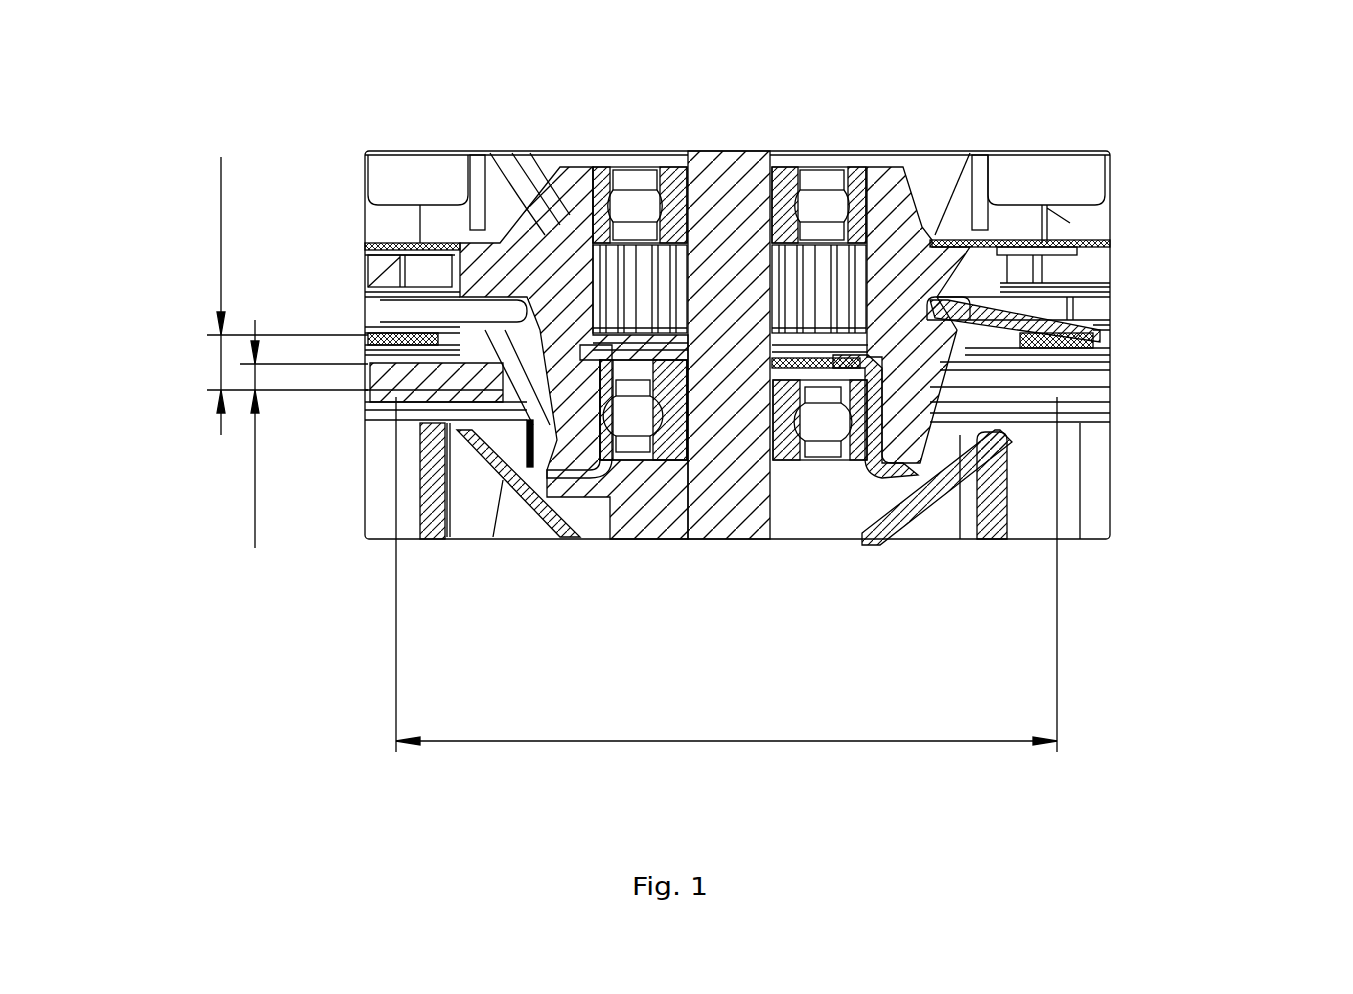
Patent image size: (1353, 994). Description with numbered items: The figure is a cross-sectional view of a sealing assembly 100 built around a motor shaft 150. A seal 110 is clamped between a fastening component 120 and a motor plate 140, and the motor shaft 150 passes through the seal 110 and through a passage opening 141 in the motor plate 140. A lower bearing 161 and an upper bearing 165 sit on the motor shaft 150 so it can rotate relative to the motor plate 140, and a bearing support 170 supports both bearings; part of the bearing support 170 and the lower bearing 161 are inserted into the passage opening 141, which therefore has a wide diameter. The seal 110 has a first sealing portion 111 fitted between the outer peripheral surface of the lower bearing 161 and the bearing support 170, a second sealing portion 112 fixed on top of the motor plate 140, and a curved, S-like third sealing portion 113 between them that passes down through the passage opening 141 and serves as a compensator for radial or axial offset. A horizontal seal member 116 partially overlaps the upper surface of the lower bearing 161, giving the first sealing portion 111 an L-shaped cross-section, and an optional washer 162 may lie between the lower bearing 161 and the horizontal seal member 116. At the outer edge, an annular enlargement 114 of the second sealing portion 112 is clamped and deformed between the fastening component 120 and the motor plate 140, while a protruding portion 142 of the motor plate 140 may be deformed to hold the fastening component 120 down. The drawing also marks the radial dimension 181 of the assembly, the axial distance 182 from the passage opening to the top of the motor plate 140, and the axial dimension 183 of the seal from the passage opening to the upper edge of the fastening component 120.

The sealing assembly 100 is at (450, 116).
The seal 110 is at (930, 395).
The first sealing portion 111 is at (875, 427).
The second sealing portion 112 is at (423, 355).
The third sealing portion 113 is at (1003, 322).
The annular enlargement 114 is at (1040, 352).
The horizontal seal member 116 is at (853, 357).
The fastening component 120 is at (1097, 331).
The motor plate 140 is at (1057, 381).
The passage opening 141 is at (962, 392).
The protruding portion 142 is at (1103, 337).
The motor shaft 150 is at (683, 503).
The lower bearing 161 is at (648, 420).
The washer 162 is at (790, 370).
The upper bearing 165 is at (660, 203).
The bearing support 170 is at (450, 270).
The radial dimension of the sealing assembly 181 is at (790, 742).
The axial distance from the shaft passage opening to the top of the motor plate 182 is at (255, 478).
The axial dimension of the seal 183 is at (221, 210).